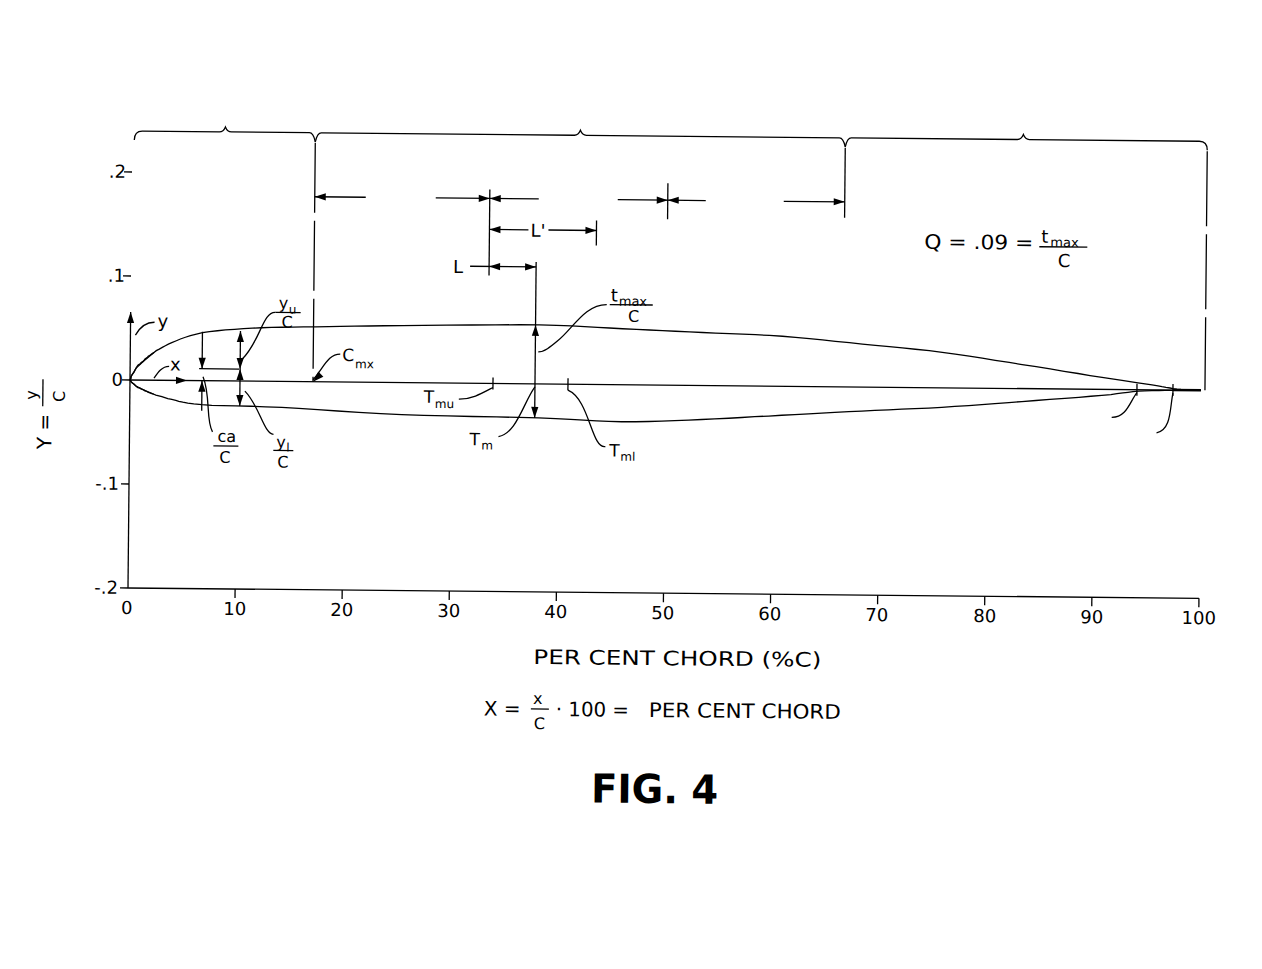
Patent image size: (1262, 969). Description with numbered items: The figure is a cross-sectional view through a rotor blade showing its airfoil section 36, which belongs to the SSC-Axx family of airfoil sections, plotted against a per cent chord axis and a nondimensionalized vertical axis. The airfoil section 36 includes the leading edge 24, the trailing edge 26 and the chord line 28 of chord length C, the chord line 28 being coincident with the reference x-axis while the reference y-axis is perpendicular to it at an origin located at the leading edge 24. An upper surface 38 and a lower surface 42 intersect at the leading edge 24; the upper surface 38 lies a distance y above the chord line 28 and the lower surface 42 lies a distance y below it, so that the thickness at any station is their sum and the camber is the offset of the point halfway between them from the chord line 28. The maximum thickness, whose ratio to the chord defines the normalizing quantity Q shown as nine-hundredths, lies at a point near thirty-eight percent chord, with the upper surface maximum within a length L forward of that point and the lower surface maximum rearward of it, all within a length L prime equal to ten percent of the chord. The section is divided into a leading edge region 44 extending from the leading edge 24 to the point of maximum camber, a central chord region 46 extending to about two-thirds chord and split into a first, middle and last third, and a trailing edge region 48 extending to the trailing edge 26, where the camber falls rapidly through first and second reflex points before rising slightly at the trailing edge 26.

The leading edge 24 is at (135, 383).
The trailing edge 26 is at (1203, 380).
The chord line 28 is at (708, 380).
The airfoil section 36 is at (665, 399).
The upper surface 38 is at (783, 330).
The lower surface 42 is at (778, 409).
The leading edge region 44 is at (186, 131).
The central chord region 46 is at (481, 131).
The trailing edge region 48 is at (935, 131).